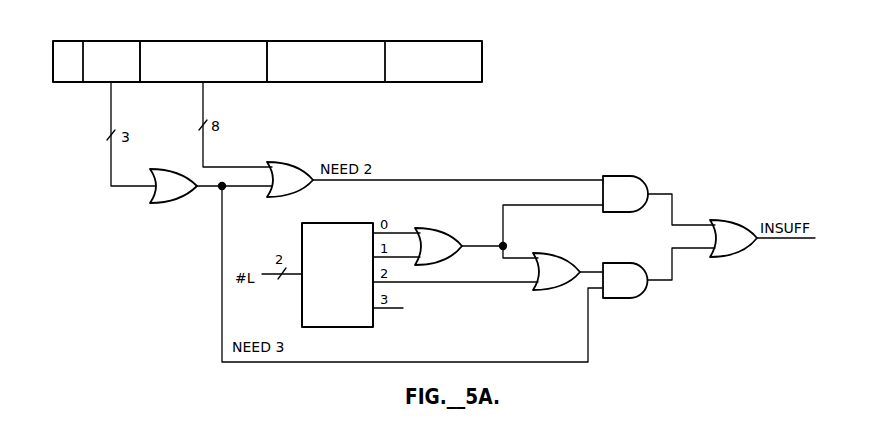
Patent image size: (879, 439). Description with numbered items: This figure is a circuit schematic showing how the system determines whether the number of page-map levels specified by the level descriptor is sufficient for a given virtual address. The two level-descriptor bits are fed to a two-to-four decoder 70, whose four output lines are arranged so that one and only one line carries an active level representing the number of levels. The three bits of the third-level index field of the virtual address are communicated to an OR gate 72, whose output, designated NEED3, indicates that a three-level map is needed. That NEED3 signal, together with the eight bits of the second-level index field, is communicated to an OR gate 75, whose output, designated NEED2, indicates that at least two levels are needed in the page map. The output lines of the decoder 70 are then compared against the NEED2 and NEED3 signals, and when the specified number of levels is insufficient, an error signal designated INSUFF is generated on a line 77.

The OR gate 72 is at (165, 204).
The OR gate 75 is at (283, 162).
The 2:4 decoder 70 is at (318, 223).
The line 77 is at (762, 245).